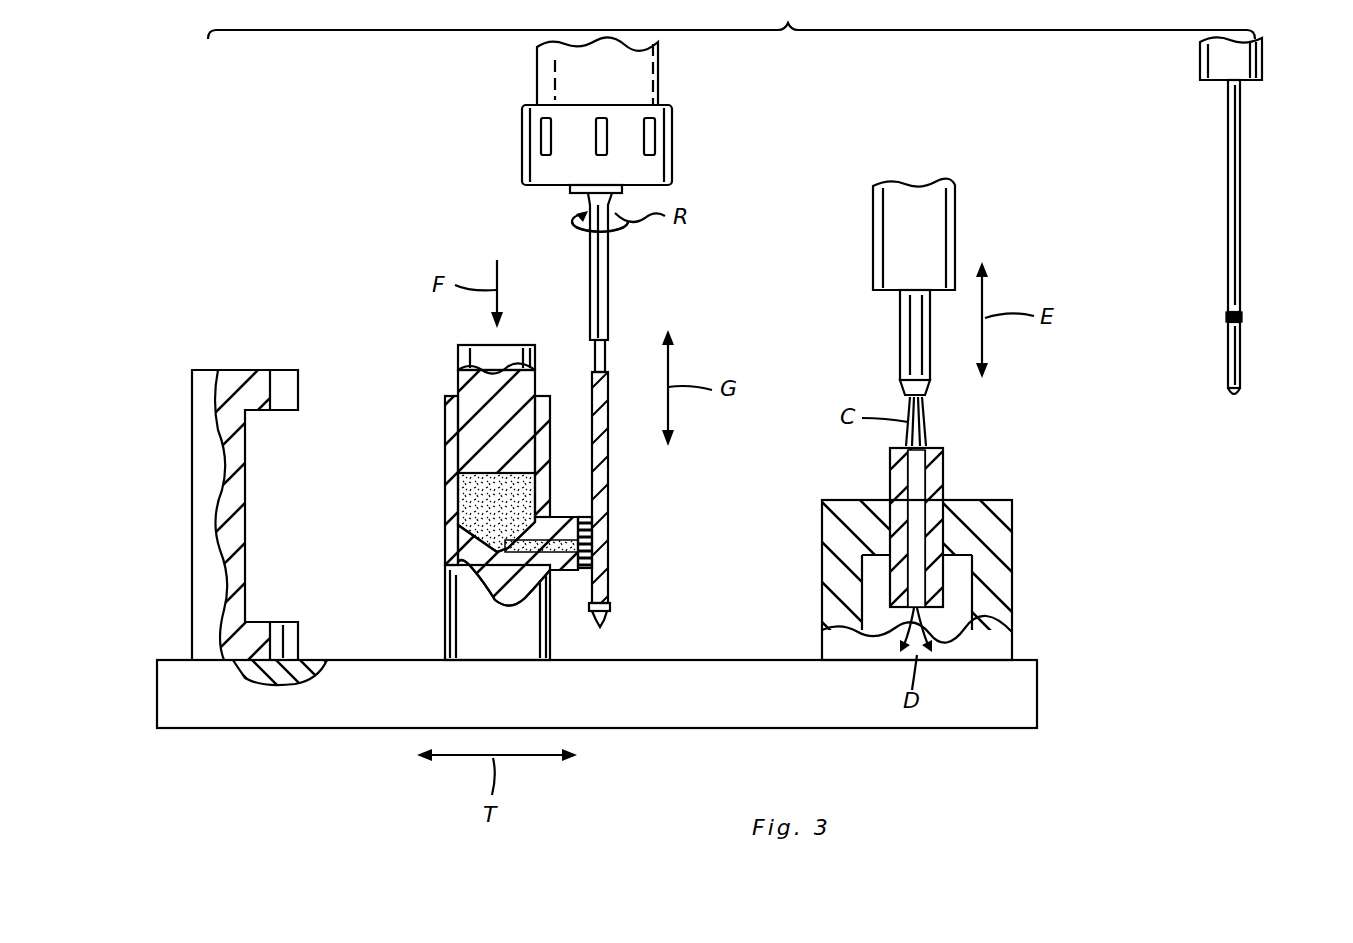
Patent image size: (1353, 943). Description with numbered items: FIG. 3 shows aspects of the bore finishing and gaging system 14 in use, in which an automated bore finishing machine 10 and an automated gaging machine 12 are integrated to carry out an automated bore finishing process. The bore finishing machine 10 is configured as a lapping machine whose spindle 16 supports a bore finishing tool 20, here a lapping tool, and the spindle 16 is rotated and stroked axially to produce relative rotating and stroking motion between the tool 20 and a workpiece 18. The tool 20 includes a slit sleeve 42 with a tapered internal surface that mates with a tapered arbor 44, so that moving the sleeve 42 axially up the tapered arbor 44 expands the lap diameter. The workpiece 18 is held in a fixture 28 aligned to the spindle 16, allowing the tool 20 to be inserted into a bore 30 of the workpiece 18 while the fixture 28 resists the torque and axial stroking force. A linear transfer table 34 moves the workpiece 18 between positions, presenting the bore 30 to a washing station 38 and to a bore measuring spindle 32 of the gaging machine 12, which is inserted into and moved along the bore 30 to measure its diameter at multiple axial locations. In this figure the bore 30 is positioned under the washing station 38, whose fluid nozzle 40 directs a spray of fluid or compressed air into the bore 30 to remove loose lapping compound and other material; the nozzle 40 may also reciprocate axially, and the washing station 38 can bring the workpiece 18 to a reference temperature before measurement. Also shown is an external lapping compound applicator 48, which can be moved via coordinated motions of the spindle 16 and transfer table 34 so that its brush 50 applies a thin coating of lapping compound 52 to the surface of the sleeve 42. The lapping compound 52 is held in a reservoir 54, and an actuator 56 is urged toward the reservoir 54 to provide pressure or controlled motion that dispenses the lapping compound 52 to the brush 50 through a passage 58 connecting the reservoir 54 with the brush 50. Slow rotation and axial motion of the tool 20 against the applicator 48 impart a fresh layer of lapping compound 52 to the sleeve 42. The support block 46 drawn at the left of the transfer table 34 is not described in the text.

The automated bore finishing machine 10 is at (514, 125).
The automated gaging machine 12 is at (1272, 63).
The bore finishing and gaging system 14 is at (731, 19).
The spindle 16 is at (578, 204).
The workpiece 18 is at (943, 462).
The bore finishing tool 20 is at (610, 378).
The fixture 28 is at (1012, 582).
The bore 30 is at (918, 458).
The bore measuring spindle 32 is at (1242, 268).
The linear transfer table 34 is at (1037, 696).
The washing station 38 is at (958, 210).
The fluid nozzle 40 is at (900, 321).
The sleeve 42 is at (590, 412).
The tapered arbor 44 is at (610, 400).
The support block 46 is at (207, 370).
The lapping compound applicator 48 is at (443, 438).
The brush 50 is at (588, 572).
The lapping compound 52 is at (475, 500).
The reservoir 54 is at (480, 527).
The actuator 56 is at (457, 356).
The passage 58 is at (497, 582).